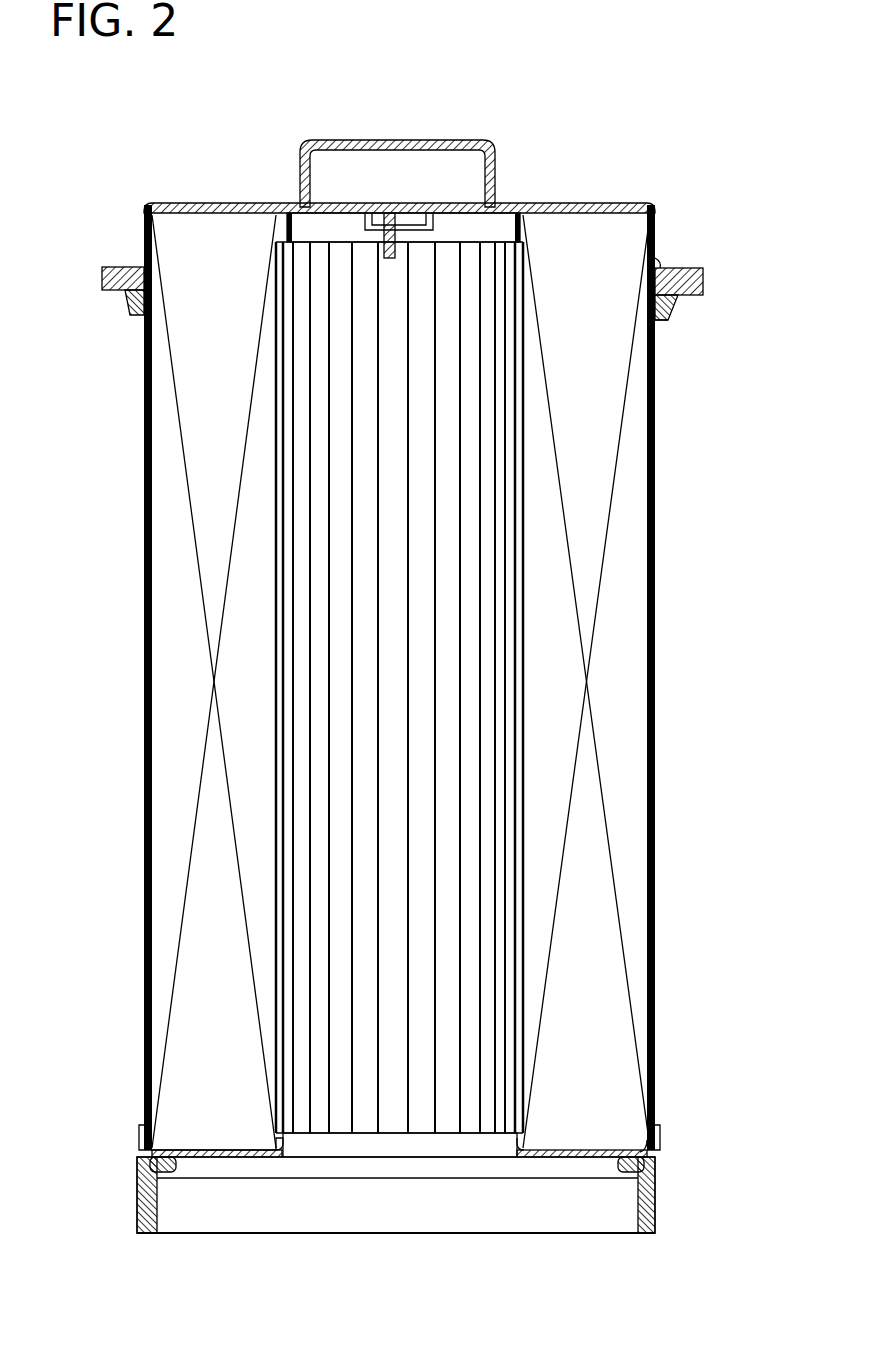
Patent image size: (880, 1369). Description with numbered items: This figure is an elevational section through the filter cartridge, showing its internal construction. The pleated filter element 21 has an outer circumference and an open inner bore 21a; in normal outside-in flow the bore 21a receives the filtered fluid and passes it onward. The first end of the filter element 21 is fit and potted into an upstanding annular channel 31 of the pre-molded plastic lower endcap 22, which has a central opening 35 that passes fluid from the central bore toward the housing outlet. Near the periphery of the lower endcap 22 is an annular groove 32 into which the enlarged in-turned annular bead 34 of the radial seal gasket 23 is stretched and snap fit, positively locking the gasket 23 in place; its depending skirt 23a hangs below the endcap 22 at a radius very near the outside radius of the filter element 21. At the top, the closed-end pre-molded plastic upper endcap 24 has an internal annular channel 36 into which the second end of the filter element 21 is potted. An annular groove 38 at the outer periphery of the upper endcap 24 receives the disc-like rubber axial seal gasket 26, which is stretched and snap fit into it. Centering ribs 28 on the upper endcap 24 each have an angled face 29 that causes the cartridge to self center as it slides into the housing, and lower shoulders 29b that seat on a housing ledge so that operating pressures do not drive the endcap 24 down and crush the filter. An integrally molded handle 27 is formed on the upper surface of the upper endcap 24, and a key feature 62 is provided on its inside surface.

The filter element 21 is at (640, 862).
The inner bore 21a is at (470, 668).
The lower endcap 22 is at (635, 1158).
The radial seal gasket 23 is at (657, 1170).
The depending skirt 23a is at (657, 1218).
The upper endcap 24 is at (148, 228).
The axial seal gasket 26 is at (705, 283).
The integrally molded handle 27 is at (397, 140).
The centering ribs 28 is at (128, 305).
The angled face 29 is at (672, 310).
The lower shoulders 29b is at (672, 322).
The upstanding annular channel 31 is at (602, 1145).
The annular groove 32 is at (175, 1167).
The in-turned annular bead 34 is at (620, 1167).
The central opening 35 is at (390, 1145).
The internal annular channel 36 is at (592, 222).
The annular groove 38 is at (655, 270).
The key feature 62 is at (345, 237).